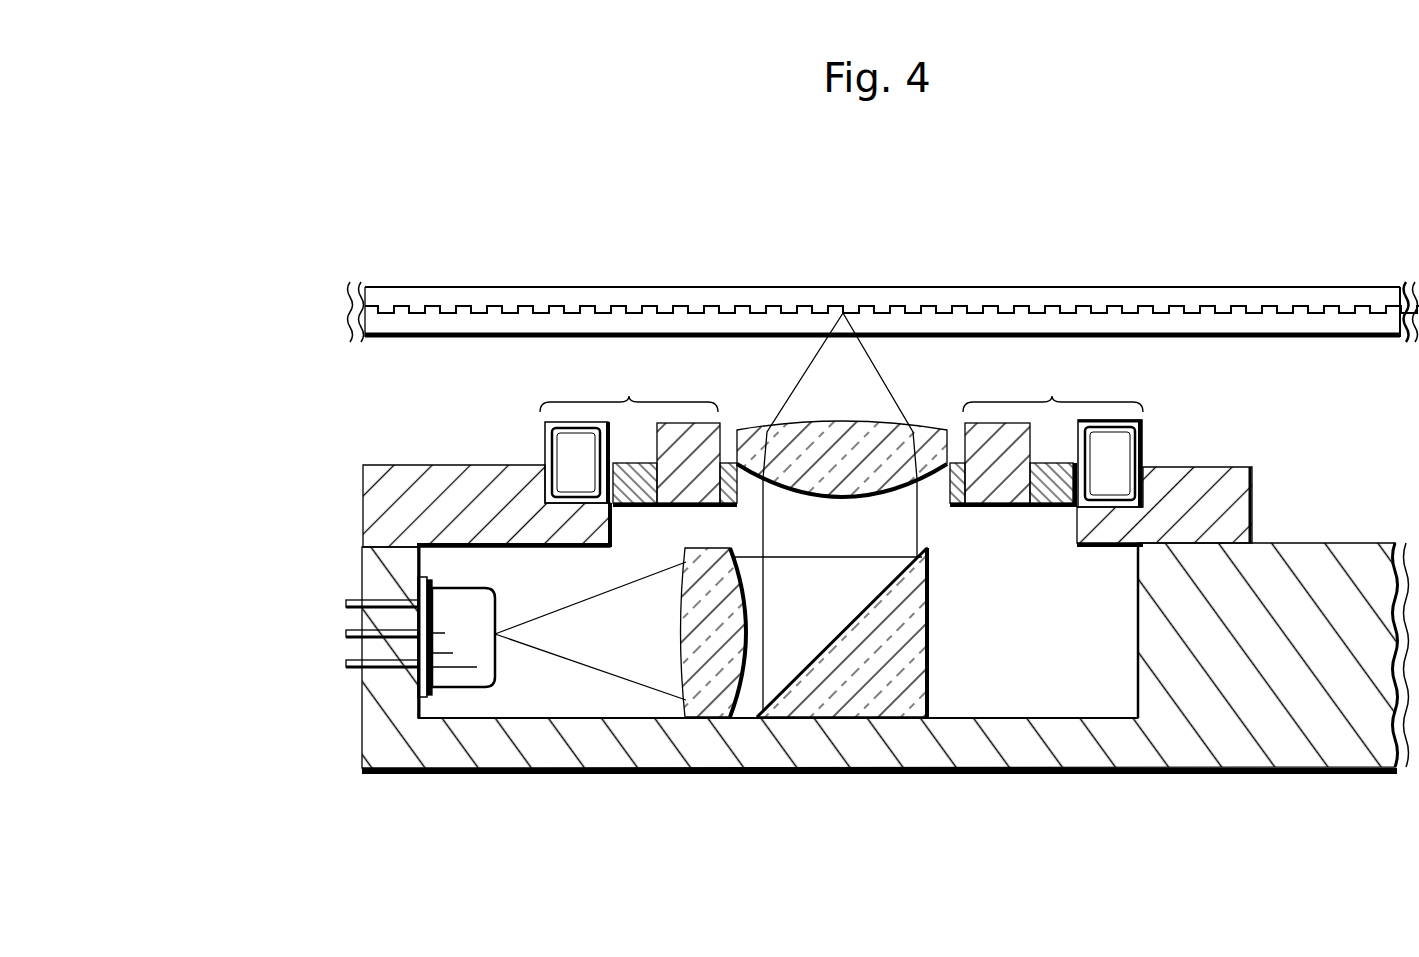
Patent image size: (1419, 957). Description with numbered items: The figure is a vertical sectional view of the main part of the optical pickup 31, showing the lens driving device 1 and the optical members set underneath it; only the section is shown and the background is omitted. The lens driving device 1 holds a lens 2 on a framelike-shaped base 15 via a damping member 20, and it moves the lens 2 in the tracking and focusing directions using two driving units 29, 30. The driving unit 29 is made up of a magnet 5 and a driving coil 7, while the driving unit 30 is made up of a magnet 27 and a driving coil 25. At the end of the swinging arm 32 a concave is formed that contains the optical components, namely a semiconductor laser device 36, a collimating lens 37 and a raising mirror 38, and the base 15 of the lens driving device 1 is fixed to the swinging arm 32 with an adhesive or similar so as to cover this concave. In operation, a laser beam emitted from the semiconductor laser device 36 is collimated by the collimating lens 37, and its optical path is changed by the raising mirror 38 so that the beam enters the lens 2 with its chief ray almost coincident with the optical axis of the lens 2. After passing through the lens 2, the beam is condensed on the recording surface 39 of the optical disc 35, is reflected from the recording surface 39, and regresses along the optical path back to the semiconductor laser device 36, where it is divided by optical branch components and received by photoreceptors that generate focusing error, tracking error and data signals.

The lens driving device 1 is at (797, 569).
The lens 2 is at (831, 447).
The magnet 5 is at (688, 452).
The driving coil 7 is at (528, 398).
The base 15 is at (385, 483).
The damping member 20 is at (636, 465).
The driving coil 25 is at (1153, 403).
The magnet 27 is at (990, 453).
The driving unit 29 is at (580, 357).
The driving unit 30 is at (1131, 359).
The optical pickup 31 is at (806, 796).
The swinging arm 32 is at (350, 710).
The optical disc 35 is at (884, 243).
The semiconductor laser device 36 is at (462, 662).
The collimating lens 37 is at (713, 690).
The raising mirror 38 is at (868, 683).
The recording surface 39 is at (1355, 305).